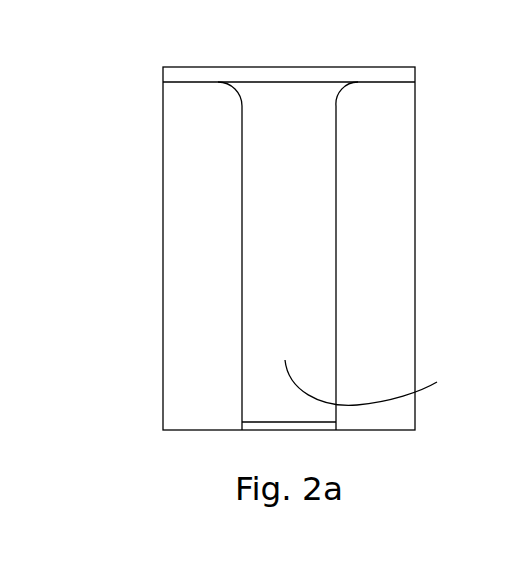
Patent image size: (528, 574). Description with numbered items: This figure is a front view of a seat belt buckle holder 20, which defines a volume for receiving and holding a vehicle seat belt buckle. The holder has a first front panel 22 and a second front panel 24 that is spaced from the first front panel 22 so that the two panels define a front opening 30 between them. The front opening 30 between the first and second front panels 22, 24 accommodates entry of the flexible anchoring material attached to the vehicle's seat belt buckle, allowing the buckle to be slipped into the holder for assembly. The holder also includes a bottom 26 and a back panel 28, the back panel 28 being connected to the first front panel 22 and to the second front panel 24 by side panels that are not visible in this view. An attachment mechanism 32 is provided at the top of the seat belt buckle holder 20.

The seat belt buckle holder 20 is at (142, 146).
The first front panel 22 is at (188, 241).
The second front panel 24 is at (380, 242).
The bottom 26 is at (262, 430).
The back panel 28 is at (377, 382).
The front opening 30 is at (307, 214).
The attachment mechanism 32 is at (335, 67).